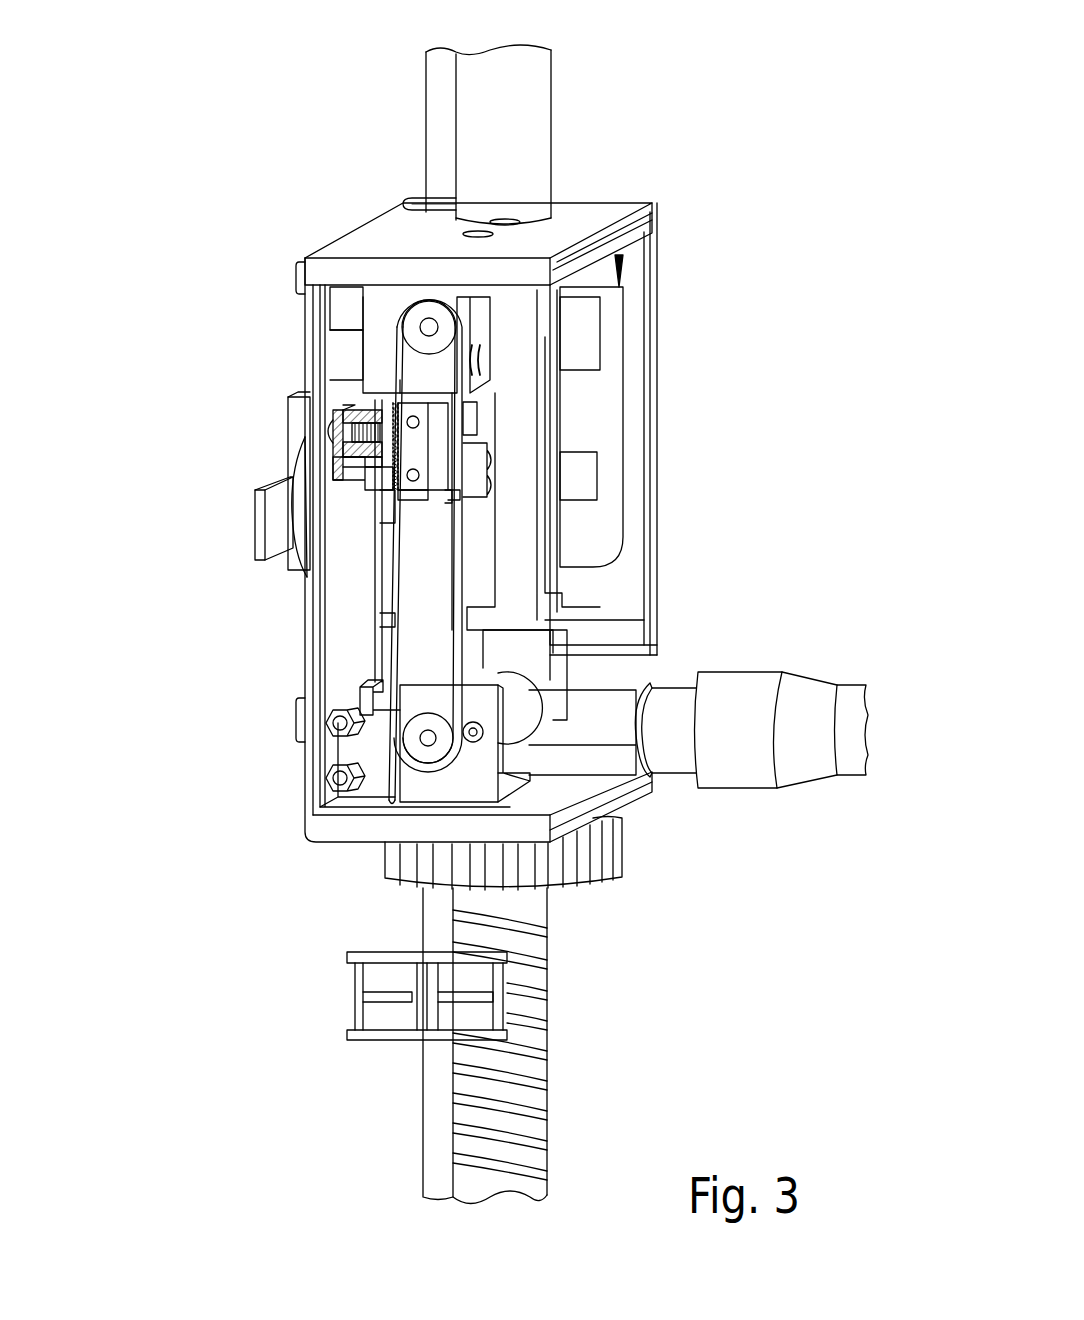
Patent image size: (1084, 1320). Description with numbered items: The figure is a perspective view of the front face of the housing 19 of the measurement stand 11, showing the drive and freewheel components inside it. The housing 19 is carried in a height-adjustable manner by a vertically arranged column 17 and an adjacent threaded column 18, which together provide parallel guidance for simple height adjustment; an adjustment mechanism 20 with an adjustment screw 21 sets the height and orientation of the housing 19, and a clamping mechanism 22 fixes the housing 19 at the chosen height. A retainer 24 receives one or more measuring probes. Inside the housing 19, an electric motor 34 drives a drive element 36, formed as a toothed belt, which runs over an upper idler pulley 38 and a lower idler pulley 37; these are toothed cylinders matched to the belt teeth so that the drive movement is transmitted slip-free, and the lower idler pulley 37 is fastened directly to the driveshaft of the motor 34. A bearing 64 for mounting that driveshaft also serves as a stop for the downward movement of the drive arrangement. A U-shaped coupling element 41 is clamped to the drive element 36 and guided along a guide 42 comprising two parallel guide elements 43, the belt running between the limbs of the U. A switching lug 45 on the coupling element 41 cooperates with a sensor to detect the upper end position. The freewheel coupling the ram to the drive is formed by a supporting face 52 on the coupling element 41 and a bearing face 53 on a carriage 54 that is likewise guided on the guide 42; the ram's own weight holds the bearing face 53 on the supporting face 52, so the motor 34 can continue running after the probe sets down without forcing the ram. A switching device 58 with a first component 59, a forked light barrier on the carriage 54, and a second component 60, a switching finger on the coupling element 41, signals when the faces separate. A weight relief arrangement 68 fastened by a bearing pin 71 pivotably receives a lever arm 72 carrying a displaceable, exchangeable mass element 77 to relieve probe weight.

The measurement stand 11 is at (670, 132).
The column 17 is at (432, 1098).
The threaded column 18 is at (535, 1090).
The housing 19 is at (680, 617).
The adjustment mechanism 20 is at (478, 1046).
The adjustment screw 21 is at (608, 843).
The clamping mechanism 22 is at (803, 770).
The retainer 24 is at (372, 1022).
The electric motor 34 is at (500, 680).
The drive element 36 is at (460, 537).
The lower idler pulley 37 is at (410, 738).
The upper idler pulley 38 is at (420, 322).
The coupling element 41 is at (375, 485).
The guide 42 is at (375, 542).
The guide elements 43 is at (390, 803).
The switching lug 45 is at (478, 420).
The supporting face 52 is at (345, 423).
The bearing face 53 is at (338, 442).
The carriage 54 is at (372, 412).
The switching device 58 is at (345, 489).
The first component 59 is at (348, 462).
The second component 60 is at (362, 495).
The bearing 64 is at (420, 700).
The weight relief arrangement 68 is at (205, 484).
The bearing pin 71 is at (298, 470).
The lever arm 72 is at (258, 503).
The mass element 77 is at (298, 428).